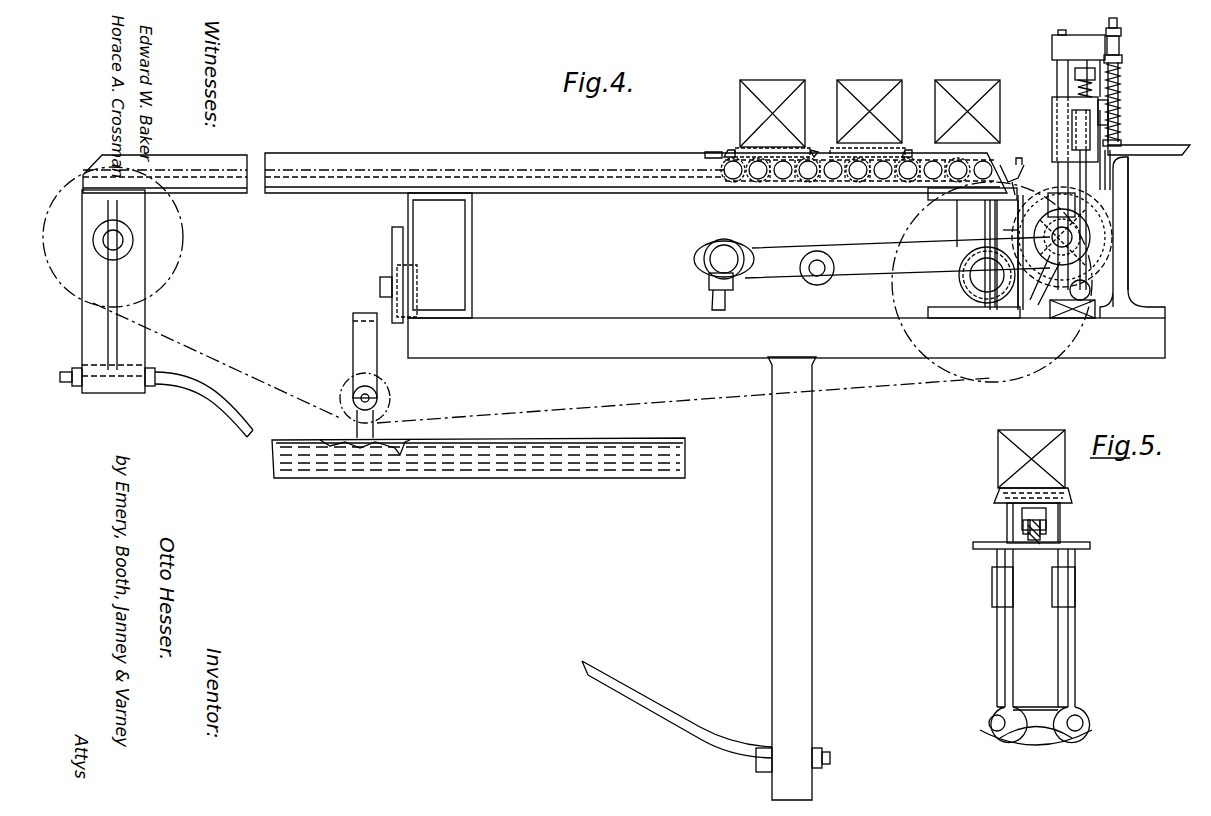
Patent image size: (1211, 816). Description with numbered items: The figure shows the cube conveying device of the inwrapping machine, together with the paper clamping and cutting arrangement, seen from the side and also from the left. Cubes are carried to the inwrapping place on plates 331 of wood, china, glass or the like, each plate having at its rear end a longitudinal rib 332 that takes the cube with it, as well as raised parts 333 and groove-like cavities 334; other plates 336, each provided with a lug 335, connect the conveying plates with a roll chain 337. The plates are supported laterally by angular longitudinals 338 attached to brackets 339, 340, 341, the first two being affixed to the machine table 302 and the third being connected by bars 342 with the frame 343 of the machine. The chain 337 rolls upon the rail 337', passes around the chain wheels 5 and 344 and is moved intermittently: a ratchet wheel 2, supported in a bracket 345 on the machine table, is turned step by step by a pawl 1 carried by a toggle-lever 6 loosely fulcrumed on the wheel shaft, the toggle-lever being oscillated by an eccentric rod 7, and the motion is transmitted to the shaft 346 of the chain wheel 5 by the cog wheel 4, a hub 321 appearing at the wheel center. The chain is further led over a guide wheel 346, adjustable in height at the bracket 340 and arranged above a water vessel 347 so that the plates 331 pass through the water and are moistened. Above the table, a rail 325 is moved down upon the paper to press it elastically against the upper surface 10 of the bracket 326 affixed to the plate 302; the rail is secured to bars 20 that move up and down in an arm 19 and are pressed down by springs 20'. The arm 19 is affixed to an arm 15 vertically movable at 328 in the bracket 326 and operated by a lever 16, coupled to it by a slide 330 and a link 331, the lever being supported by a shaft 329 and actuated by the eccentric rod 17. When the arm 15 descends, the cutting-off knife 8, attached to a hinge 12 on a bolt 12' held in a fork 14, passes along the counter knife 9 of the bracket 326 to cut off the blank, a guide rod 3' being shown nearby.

In FIG. 4, the pawl 1 is at (1115, 200).
In FIG. 4, the ratchet wheel 2 is at (1019, 182).
In FIG. 4, the guide rod 3' is at (1006, 252).
In FIG. 4, the cog wheel 4 is at (978, 242).
In FIG. 4, the chain wheel 5 is at (995, 380).
In FIG. 4, the toggle-lever 6 is at (1095, 272).
In FIG. 4, the eccentric rod 7 is at (1070, 320).
In FIG. 4, the cutting-off knife 8 is at (1110, 124).
In FIG. 4, the counter knife 9 is at (1112, 153).
In FIG. 4, the upper surface 10 is at (1145, 145).
In FIG. 4, the hinge 12 is at (1061, 125).
In FIG. 4, the bolt 12' is at (1060, 200).
In FIG. 4, the fork 14 is at (1052, 134).
In FIG. 4, the arm 15 is at (1017, 165).
In FIG. 4, the lever 16 is at (856, 246).
In FIG. 4, the eccentric rod 17 is at (723, 250).
In FIG. 4, the arm 19 is at (1080, 42).
In FIG. 4, the bars 20 is at (1134, 99).
In FIG. 4, the springs 20' is at (1134, 102).
In FIG. 4, the plate 302 is at (786, 338).
In FIG. 4, the shaft 321 is at (1076, 233).
In FIG. 4, the rail 325 is at (1122, 144).
In FIG. 4, the bracket 326 is at (1130, 182).
In FIG. 4, the guide 328 is at (1058, 305).
In FIG. 4, the shaft 329 is at (817, 252).
In FIG. 4, the slide 330 is at (1100, 250).
In FIG. 5, the slide 330 is at (1068, 497).
In FIG. 4, the plates 331 is at (885, 148).
In FIG. 4, the longitudinal rib 332 is at (737, 150).
In FIG. 4, the raised parts 333 is at (761, 146).
In FIG. 4, the groove-like cavities 334 is at (738, 150).
In FIG. 4, the lug 335 is at (778, 189).
In FIG. 5, the lug 335 is at (1058, 526).
In FIG. 5, the plates 336 is at (1058, 512).
In FIG. 4, the roll chain 337 is at (684, 290).
In FIG. 5, the roll chain 337 is at (1036, 546).
In FIG. 4, the rail 337' is at (857, 190).
In FIG. 5, the rail 337' is at (1077, 547).
In FIG. 4, the angular longitudinals 338 is at (513, 160).
In FIG. 5, the angular longitudinals 338 is at (1010, 516).
In FIG. 4, the bracket 339 is at (950, 218).
In FIG. 4, the bracket 340 is at (468, 288).
In FIG. 4, the bracket 341 is at (140, 312).
In FIG. 5, the bracket 341 is at (1075, 668).
In FIG. 4, the bars 342 is at (225, 412).
In FIG. 5, the bars 342 is at (1072, 733).
In FIG. 4, the frame 343 is at (818, 566).
In FIG. 4, the chain wheel 344 is at (178, 250).
In FIG. 4, the bracket 345 is at (1010, 300).
In FIG. 4, the guide wheel 346 is at (380, 402).
In FIG. 4, the water vessel 347 is at (488, 484).